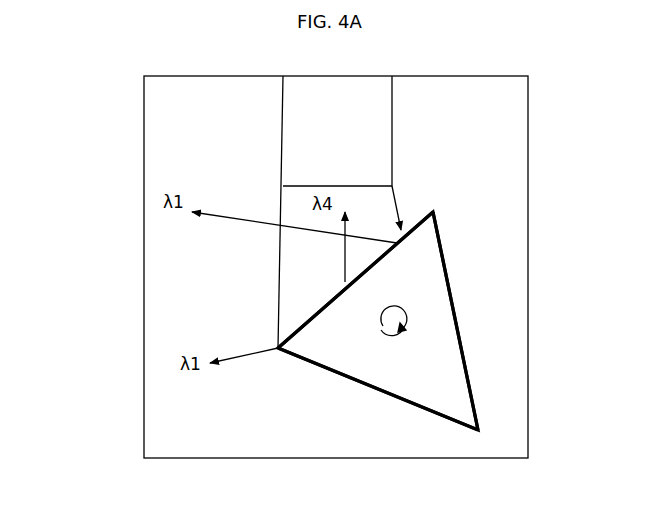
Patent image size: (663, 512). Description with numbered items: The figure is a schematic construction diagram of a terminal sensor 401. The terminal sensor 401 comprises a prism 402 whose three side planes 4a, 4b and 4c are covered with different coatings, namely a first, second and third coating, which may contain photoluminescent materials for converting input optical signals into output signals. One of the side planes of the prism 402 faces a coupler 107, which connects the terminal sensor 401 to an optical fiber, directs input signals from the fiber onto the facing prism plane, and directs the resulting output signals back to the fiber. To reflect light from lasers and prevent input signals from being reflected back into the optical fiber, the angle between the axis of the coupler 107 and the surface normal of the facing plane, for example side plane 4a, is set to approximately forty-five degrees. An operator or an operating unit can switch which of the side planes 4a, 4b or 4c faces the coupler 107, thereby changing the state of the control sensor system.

The terminal sensor 401 is at (143, 142).
The coupler 107 is at (284, 118).
The prism 402 is at (440, 342).
The side plane 4a is at (416, 222).
The side plane 4b is at (448, 277).
The side plane 4c is at (348, 385).